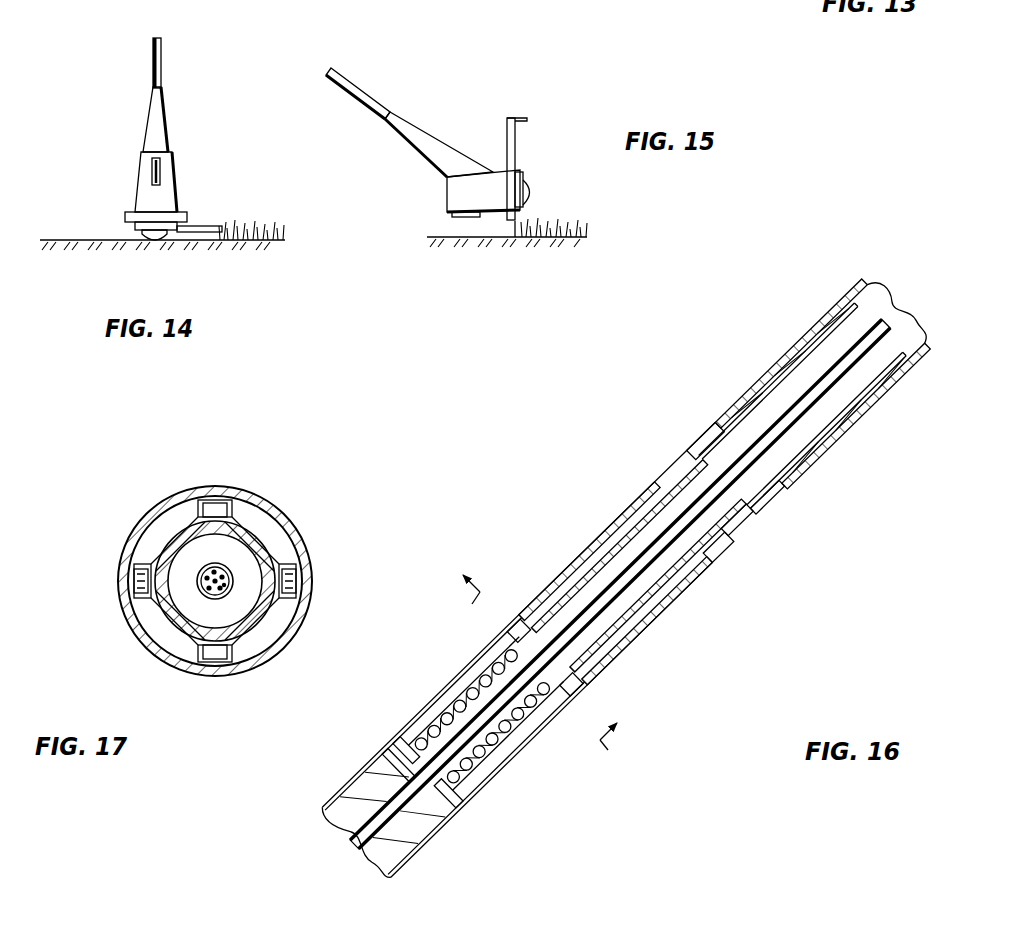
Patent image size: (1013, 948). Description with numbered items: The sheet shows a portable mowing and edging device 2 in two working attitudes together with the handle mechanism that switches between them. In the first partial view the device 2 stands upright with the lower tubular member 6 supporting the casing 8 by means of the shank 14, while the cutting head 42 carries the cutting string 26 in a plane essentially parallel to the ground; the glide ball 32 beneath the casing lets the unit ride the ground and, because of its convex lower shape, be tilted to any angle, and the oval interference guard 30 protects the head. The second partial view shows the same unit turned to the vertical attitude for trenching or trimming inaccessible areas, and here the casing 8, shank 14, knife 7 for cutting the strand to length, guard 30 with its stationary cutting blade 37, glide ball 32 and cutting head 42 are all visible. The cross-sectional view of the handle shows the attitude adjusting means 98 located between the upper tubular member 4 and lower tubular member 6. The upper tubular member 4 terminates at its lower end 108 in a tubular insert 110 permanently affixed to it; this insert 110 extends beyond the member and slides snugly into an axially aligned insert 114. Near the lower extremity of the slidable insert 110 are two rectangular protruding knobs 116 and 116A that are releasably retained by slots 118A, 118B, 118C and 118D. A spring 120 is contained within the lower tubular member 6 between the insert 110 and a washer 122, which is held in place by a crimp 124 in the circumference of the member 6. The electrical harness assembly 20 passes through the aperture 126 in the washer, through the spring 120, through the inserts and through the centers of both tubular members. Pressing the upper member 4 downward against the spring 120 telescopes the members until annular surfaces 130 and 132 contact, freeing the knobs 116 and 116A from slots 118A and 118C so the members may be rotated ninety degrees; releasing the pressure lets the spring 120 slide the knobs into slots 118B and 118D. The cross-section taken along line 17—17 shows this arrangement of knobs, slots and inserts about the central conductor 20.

In FIG. 14, the portable mowing and edging device 2 is at (144, 168).
In FIG. 15, the portable mowing and edging device 2 is at (459, 163).
In FIG. 16, the upper tubular member 4 is at (818, 318).
In FIG. 14, the lower tubular member 6 is at (162, 53).
In FIG. 15, the lower tubular member 6 is at (353, 82).
In FIG. 17, the lower tubular member 6 is at (137, 637).
In FIG. 14, the cutting knife 7 is at (163, 173).
In FIG. 15, the cutting knife 7 is at (452, 216).
In FIG. 14, the casing 8 is at (138, 173).
In FIG. 15, the casing 8 is at (446, 188).
In FIG. 14, the shank 14 is at (163, 112).
In FIG. 15, the shank 14 is at (393, 132).
In FIG. 16, the connector 17 is at (555, 646).
In FIG. 17, the conductor 20 is at (203, 572).
In FIG. 16, the conductor 20 is at (882, 316).
In FIG. 14, the cutting string 26 is at (203, 224).
In FIG. 15, the cutting string 26 is at (520, 221).
In FIG. 14, the interference guard 30 is at (127, 217).
In FIG. 15, the interference guard 30 is at (507, 220).
In FIG. 14, the glide ball 32 is at (158, 243).
In FIG. 15, the glide ball 32 is at (535, 192).
In FIG. 15, the stationary cutting blade 37 is at (524, 120).
In FIG. 14, the cutting head 42 is at (132, 228).
In FIG. 15, the cutting head 42 is at (521, 173).
In FIG. 16, the attitude adjusting means 98 is at (741, 660).
In FIG. 16, the lower end of upper tubular member 108 is at (781, 488).
In FIG. 17, the tubular insert 110 is at (270, 653).
In FIG. 16, the tubular insert 110 is at (760, 513).
In FIG. 16, the tubular insert 114 is at (710, 556).
In FIG. 17, the protruding knob 116 is at (297, 583).
In FIG. 16, the protruding knob 116 is at (521, 625).
In FIG. 17, the protruding knob 116A is at (137, 580).
In FIG. 16, the protruding knob 116A is at (570, 692).
In FIG. 17, the slot 118A is at (287, 567).
In FIG. 17, the slot 118B is at (223, 500).
In FIG. 17, the slot 118C is at (143, 562).
In FIG. 17, the slot 118D is at (210, 660).
In FIG. 16, the spring 120 is at (476, 682).
In FIG. 16, the washer 122 is at (462, 797).
In FIG. 16, the crimp 124 is at (401, 738).
In FIG. 16, the aperture 126 is at (396, 760).
In FIG. 16, the annular surface 130 is at (690, 455).
In FIG. 16, the annular surface 132 is at (661, 490).